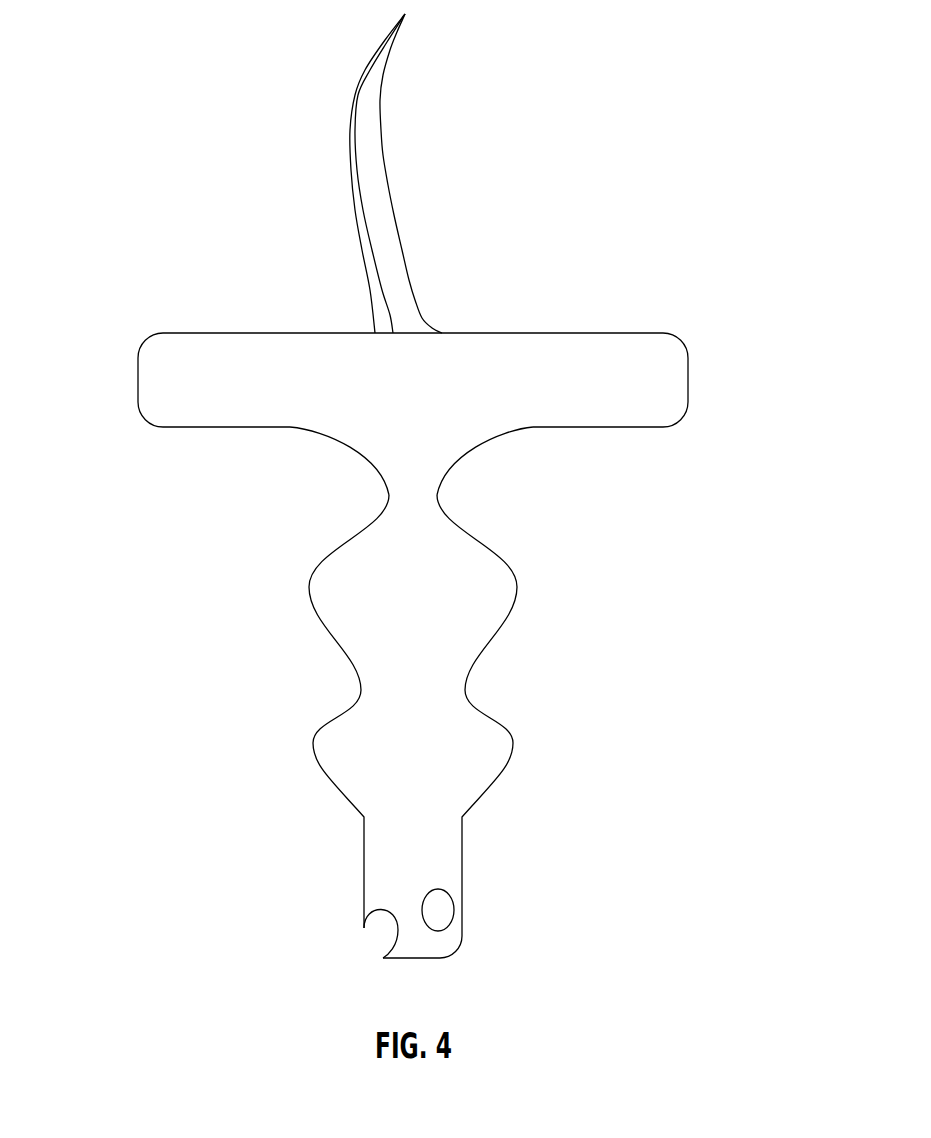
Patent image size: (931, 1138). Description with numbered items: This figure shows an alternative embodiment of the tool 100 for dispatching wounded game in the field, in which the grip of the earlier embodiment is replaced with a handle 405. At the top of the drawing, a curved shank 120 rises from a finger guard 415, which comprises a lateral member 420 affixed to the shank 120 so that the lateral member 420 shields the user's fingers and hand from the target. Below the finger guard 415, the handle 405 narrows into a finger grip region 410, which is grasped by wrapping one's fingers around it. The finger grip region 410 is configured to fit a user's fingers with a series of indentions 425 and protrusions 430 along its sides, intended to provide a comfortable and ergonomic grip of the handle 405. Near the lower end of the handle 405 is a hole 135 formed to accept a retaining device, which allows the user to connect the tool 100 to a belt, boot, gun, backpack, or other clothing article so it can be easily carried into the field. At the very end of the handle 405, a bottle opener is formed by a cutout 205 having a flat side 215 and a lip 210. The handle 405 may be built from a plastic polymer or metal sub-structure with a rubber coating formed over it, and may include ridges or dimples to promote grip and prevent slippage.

The tool 100 is at (693, 82).
The shank 120 is at (330, 91).
The hole 135 is at (450, 910).
The cutout 205 is at (369, 945).
The lip 210 is at (363, 928).
The flat side 215 is at (383, 958).
The handle 405 is at (260, 561).
The finger grip region 410 is at (313, 745).
The finger guard 415 is at (129, 330).
The lateral member 420 is at (620, 333).
The indentions 425 is at (470, 491).
The protrusions 430 is at (531, 585).